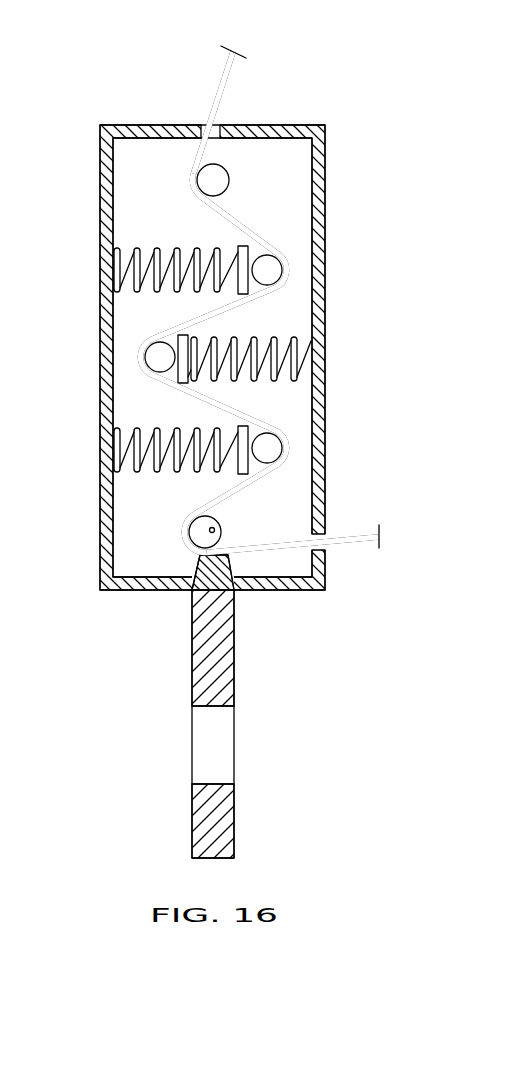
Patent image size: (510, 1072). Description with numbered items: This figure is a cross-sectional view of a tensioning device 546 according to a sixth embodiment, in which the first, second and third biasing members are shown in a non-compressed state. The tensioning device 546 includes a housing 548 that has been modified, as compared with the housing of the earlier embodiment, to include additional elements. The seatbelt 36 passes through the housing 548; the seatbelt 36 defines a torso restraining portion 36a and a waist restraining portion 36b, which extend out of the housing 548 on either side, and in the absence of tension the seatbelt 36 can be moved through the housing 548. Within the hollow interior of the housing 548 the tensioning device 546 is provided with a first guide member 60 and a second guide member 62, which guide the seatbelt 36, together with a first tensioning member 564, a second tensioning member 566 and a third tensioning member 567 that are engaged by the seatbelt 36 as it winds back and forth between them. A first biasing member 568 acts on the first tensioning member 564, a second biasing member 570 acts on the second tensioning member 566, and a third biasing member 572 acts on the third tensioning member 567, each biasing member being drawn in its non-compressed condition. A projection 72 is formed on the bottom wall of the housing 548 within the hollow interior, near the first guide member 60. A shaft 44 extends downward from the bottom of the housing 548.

The tensioning device 546 is at (67, 146).
The housing 548 is at (318, 153).
The seatbelt 36 is at (226, 96).
The torso restraining portion 36a is at (353, 530).
The waist restraining portion 36b is at (228, 74).
The second guide member 62 is at (214, 181).
The third tensioning member 567 is at (266, 269).
The second tensioning member 566 is at (157, 361).
The first tensioning member 564 is at (268, 452).
The first guide member 60 is at (200, 534).
The third biasing member 572 is at (198, 245).
The second biasing member 570 is at (230, 378).
The first biasing member 568 is at (198, 471).
The projection 72 is at (228, 569).
The shaft 44 is at (213, 648).